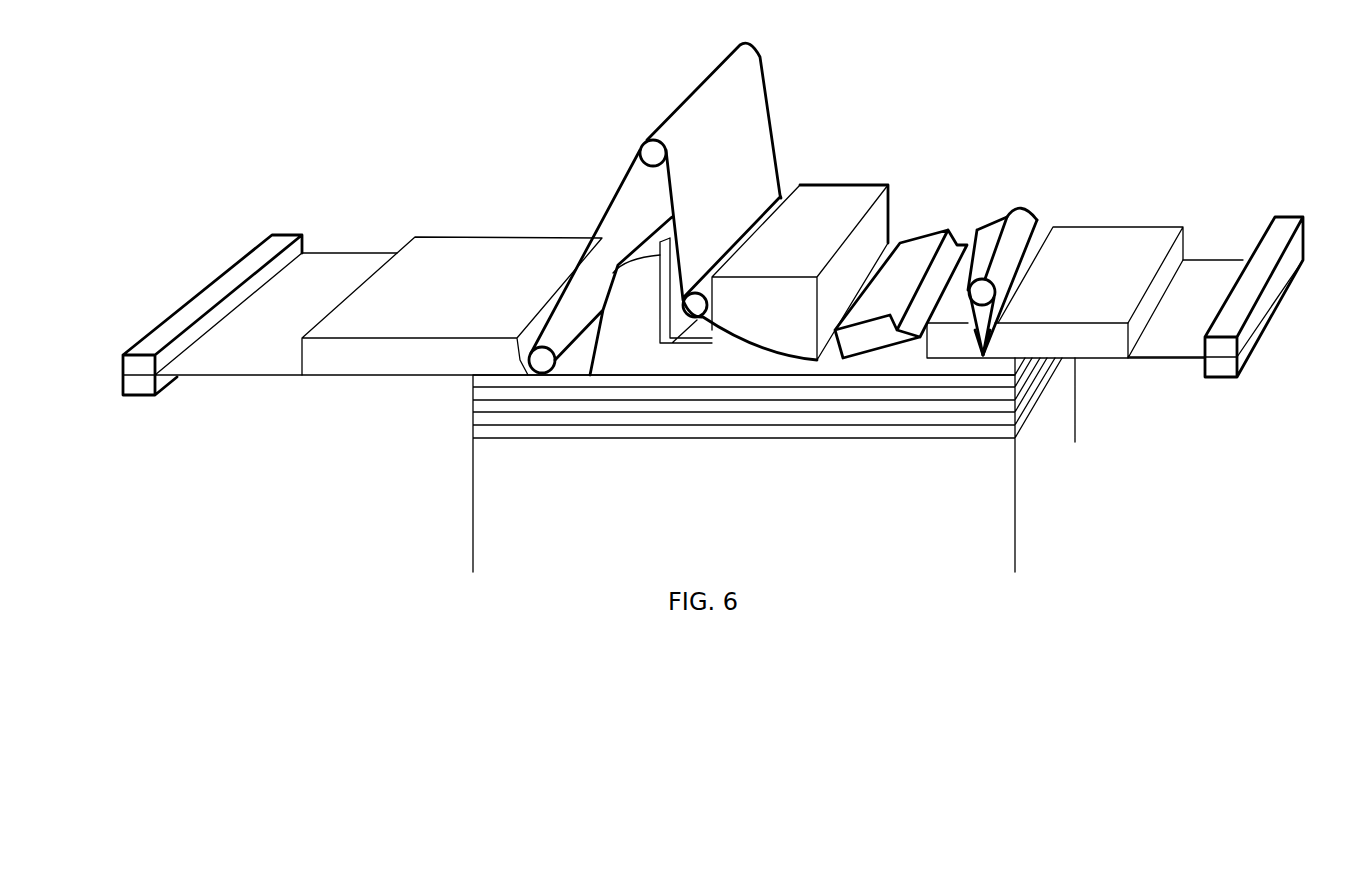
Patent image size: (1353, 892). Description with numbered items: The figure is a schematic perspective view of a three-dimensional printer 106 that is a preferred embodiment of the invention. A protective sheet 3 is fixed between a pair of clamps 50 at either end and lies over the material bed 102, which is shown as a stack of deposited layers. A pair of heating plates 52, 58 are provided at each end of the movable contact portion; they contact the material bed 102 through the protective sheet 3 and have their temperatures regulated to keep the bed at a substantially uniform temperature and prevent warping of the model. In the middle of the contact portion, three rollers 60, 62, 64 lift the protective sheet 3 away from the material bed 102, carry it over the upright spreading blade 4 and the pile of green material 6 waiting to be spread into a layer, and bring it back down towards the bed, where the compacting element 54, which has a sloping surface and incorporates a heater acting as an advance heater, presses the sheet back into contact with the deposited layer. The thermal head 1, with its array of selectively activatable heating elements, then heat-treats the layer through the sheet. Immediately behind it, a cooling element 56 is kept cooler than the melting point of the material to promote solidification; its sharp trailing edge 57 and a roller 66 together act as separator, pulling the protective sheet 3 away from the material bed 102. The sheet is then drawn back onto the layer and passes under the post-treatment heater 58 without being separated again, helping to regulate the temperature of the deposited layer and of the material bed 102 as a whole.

The printer 106 is at (918, 89).
The clamps 50 is at (288, 238).
The heating plate 52 is at (440, 258).
The protective sheet 3 is at (236, 357).
The roller 62 is at (650, 153).
The roller 60 is at (542, 357).
The roller 64 is at (705, 305).
The spreading blade 4 is at (675, 253).
The compacting element 54 is at (850, 197).
The thermal head 1 is at (927, 242).
The cooling element 56 is at (985, 285).
The roller 66 is at (987, 288).
The sharp trailing edge 57 is at (985, 362).
The post-treatment heater 58 is at (1110, 247).
The green material 6 is at (637, 345).
The material bed 102 is at (473, 433).